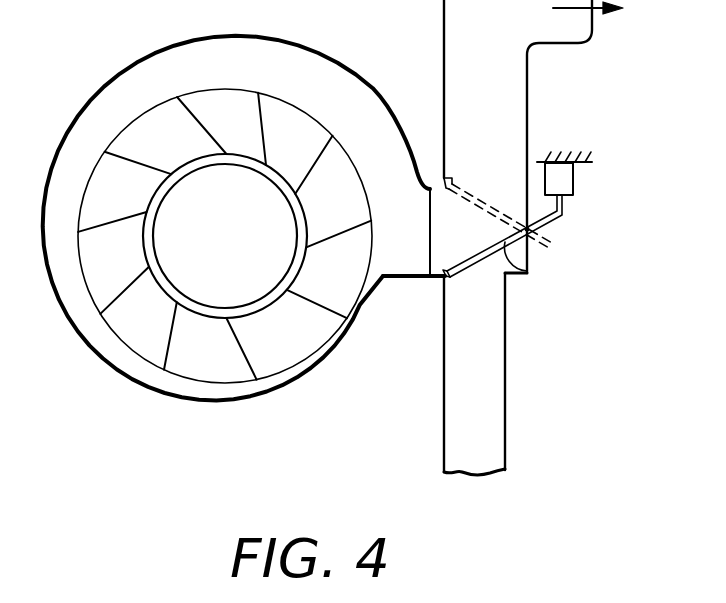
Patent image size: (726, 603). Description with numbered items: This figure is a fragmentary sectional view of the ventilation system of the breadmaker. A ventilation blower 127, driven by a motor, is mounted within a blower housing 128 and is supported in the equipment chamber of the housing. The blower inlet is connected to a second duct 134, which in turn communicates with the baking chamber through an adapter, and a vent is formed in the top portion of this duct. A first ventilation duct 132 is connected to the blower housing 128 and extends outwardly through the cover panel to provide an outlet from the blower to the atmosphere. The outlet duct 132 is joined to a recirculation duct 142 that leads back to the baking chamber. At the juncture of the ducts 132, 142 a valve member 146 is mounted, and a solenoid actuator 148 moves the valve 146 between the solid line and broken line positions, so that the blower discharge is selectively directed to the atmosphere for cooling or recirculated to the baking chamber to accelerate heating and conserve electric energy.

The ventilation blower 127 is at (123, 125).
The blower housing 128 is at (270, 38).
The second duct 134 is at (172, 285).
The first ventilation duct 132 is at (513, 87).
The recirculation duct 142 is at (490, 380).
The valve member 146 is at (527, 273).
The solenoid actuator 148 is at (563, 177).